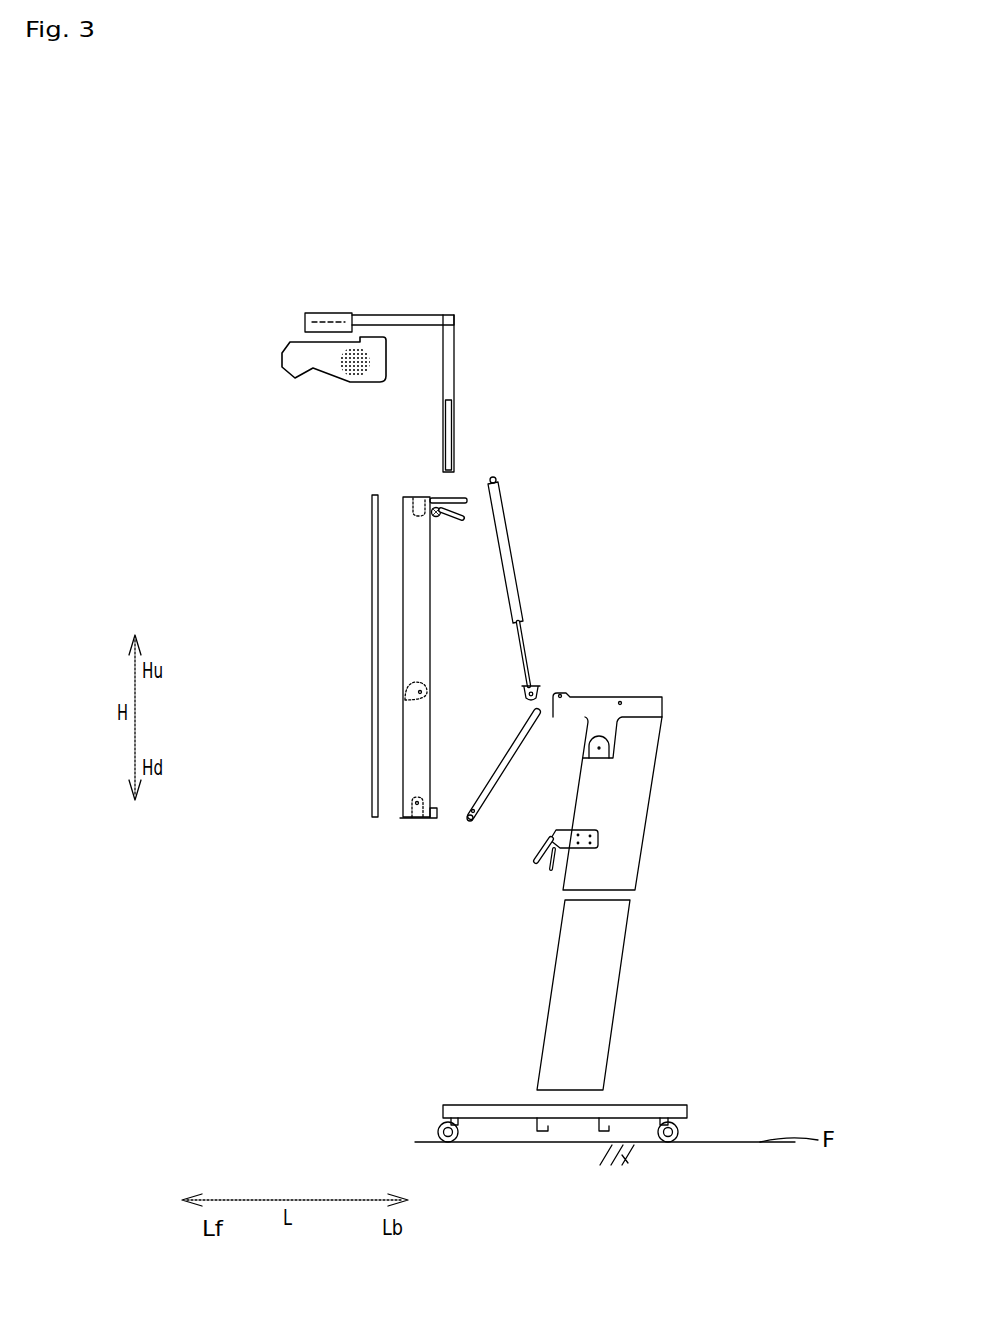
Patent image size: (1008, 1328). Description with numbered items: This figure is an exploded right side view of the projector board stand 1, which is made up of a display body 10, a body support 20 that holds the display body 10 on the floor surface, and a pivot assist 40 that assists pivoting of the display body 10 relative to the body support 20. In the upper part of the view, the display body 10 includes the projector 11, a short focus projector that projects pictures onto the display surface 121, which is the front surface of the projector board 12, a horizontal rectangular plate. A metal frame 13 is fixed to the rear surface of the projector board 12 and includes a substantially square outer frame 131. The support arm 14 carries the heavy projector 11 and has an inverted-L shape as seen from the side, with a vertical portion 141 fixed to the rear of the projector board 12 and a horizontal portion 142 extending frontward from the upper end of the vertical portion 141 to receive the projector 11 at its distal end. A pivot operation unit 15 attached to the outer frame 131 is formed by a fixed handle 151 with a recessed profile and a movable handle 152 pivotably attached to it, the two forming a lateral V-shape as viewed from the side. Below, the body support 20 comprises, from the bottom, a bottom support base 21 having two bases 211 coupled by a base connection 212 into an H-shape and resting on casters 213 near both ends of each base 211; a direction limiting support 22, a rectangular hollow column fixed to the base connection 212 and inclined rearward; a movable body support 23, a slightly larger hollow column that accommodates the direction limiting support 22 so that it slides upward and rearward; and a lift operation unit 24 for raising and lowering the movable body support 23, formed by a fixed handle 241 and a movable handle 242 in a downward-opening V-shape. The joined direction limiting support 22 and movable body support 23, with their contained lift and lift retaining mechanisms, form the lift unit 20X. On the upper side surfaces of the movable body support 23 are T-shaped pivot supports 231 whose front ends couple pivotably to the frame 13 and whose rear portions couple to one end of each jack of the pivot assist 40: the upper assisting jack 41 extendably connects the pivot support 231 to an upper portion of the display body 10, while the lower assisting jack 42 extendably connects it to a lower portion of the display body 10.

The projector board stand 1 is at (679, 391).
The display body 10 is at (651, 463).
The projector 11 is at (290, 351).
The projector board 12 is at (315, 656).
The display surface 121 is at (374, 583).
The frame 13 is at (321, 657).
The outer frame 131 is at (413, 743).
The support arm 14 is at (472, 296).
The vertical portion 141 is at (455, 357).
The horizontal portion 142 is at (392, 315).
The pivot operation unit 15 is at (345, 442).
The fixed handle 151 is at (442, 498).
The movable handle 152 is at (423, 510).
The body support 20 is at (601, 887).
The lift unit 20X is at (716, 698).
The bottom support base 21 is at (350, 1060).
The base 211 is at (483, 1113).
The base connection 212 is at (553, 1125).
The caster 213 is at (440, 1125).
The direction limiting support 22 is at (588, 992).
The movable body support 23 is at (640, 776).
The pivot support 231 is at (594, 703).
The lift operation unit 24 is at (428, 855).
The fixed handle 241 is at (542, 858).
The movable handle 242 is at (553, 867).
The pivot assist 40 is at (473, 645).
The upper assisting jack 41 is at (512, 583).
The lower assisting jack 42 is at (493, 767).